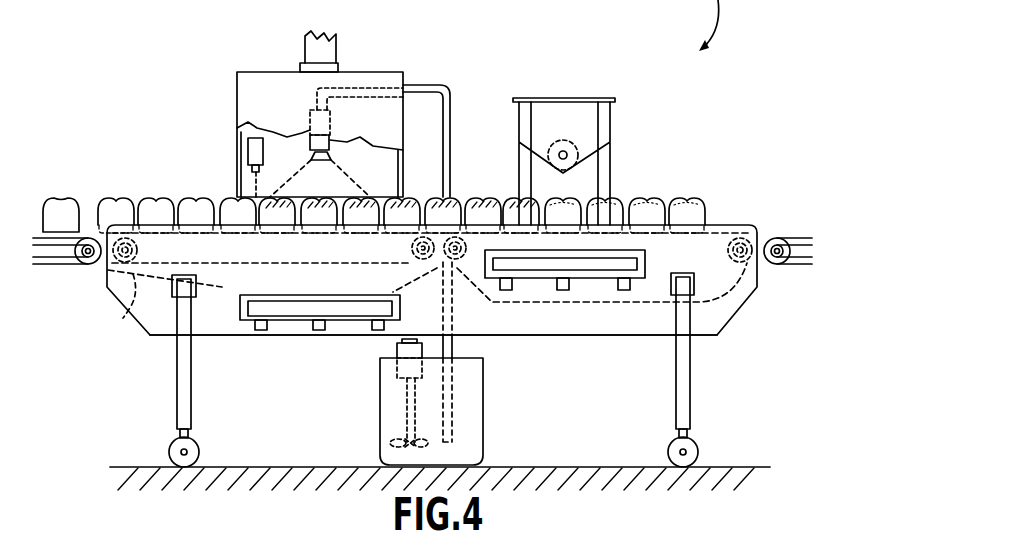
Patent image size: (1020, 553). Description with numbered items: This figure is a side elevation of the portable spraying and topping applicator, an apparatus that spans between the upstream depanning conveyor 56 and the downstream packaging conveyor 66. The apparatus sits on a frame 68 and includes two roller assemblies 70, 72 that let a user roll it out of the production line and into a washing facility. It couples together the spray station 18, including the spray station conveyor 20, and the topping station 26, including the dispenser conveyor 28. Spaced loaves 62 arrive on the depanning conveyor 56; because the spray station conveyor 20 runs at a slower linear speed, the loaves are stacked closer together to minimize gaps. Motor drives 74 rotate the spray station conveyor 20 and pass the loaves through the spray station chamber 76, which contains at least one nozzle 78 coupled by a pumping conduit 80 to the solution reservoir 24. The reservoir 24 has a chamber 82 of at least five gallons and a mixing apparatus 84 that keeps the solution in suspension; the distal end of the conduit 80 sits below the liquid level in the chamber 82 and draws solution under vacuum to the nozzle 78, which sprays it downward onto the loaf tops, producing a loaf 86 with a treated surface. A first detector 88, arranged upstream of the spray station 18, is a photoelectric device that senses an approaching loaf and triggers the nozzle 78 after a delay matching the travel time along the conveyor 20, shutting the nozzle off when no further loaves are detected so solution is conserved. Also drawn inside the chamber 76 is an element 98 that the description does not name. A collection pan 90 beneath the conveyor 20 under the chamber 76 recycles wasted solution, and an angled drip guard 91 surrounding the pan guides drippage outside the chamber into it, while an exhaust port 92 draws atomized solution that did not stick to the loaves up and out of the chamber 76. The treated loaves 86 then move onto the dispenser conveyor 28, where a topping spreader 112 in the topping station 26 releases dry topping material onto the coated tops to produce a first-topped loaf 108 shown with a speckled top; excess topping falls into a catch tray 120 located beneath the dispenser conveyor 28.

The spray station 18 is at (319, 104).
The spray station conveyor 20 is at (160, 232).
The solution reservoir 24 is at (442, 363).
The topping station 26 is at (583, 135).
The dispenser conveyor 28 is at (728, 222).
The depanning conveyor 56 is at (61, 268).
The loaf 62 is at (60, 197).
The packaging conveyor 66 is at (786, 264).
The frame 68 is at (643, 335).
The roller assembly 70 is at (177, 398).
The roller assembly 72 is at (692, 392).
The motor drives 74 is at (410, 249).
The spray station chamber 76 is at (382, 72).
The nozzle 78 is at (306, 153).
The pumping conduit 80 is at (440, 85).
The chamber 82 is at (485, 395).
The mixing apparatus 84 is at (396, 351).
The loaf having a treated surface 86 is at (410, 195).
The first detector 88 is at (247, 150).
The collection pan 90 is at (292, 333).
The angled drip guard 91 is at (123, 318).
The exhaust port 92 is at (300, 48).
The spray pattern baffle 98 is at (347, 173).
The first-topped loaf 108 is at (690, 197).
The topping spreader 112 is at (565, 138).
The catch tray 120 is at (592, 283).